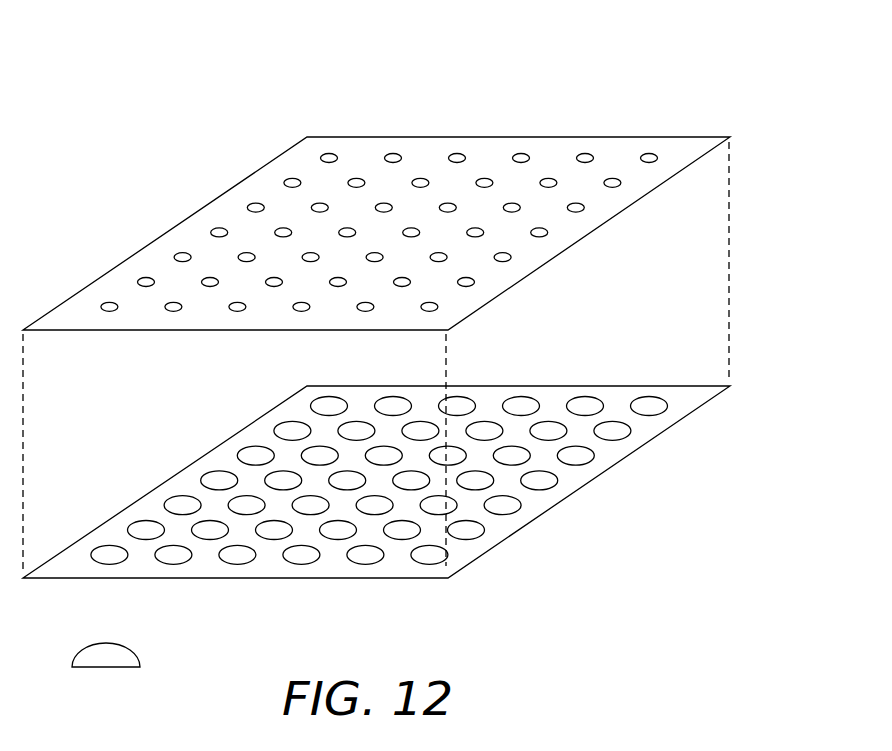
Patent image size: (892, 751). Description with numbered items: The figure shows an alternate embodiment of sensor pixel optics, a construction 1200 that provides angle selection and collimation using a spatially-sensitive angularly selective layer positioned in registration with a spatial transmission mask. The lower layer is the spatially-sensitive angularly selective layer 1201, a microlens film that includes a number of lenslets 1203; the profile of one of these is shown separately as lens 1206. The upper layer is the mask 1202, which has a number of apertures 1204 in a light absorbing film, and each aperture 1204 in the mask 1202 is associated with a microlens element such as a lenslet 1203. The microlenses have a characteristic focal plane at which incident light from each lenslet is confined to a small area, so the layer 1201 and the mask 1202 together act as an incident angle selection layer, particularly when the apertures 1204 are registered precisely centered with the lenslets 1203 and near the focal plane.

The construction 1200 is at (400, 314).
The spatially-sensitive angularly selective layer 1201 is at (376, 482).
The mask 1202 is at (376, 190).
The lenslets 1203 is at (507, 505).
The apertures 1204 is at (645, 153).
The lens 1206 is at (115, 653).